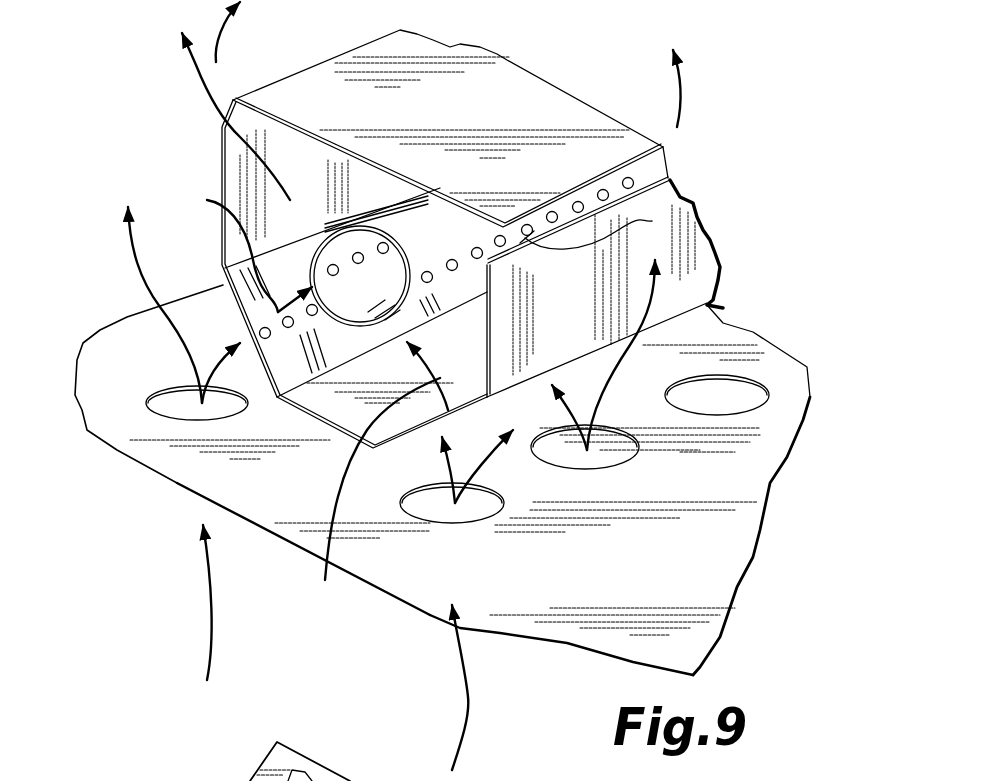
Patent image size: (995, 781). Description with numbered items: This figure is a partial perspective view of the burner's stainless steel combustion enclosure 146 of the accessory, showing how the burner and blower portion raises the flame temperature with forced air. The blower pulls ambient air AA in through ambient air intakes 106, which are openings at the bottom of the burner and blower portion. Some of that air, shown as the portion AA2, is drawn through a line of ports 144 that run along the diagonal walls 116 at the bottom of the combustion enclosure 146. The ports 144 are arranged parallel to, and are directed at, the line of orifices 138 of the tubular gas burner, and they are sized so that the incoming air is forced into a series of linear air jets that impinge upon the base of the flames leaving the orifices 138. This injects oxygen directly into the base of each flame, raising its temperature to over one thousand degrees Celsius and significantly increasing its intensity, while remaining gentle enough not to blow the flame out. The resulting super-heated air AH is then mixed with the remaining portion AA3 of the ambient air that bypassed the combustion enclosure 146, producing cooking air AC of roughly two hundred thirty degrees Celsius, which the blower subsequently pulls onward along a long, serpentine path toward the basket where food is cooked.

The ambient air intakes 106 is at (160, 390).
The diagonal walls 116 is at (225, 300).
The orifices 138 is at (360, 253).
The ports 144 is at (182, 478).
The combustion enclosure 146 is at (723, 307).
The ambient air AA is at (210, 613).
The portion of ambient air drawn through ports AA2 is at (301, 399).
The portion of ambient air bypassing combustion enclosure AA3 is at (143, 280).
The cooking air AC is at (217, 47).
The super-heated air AH is at (205, 95).